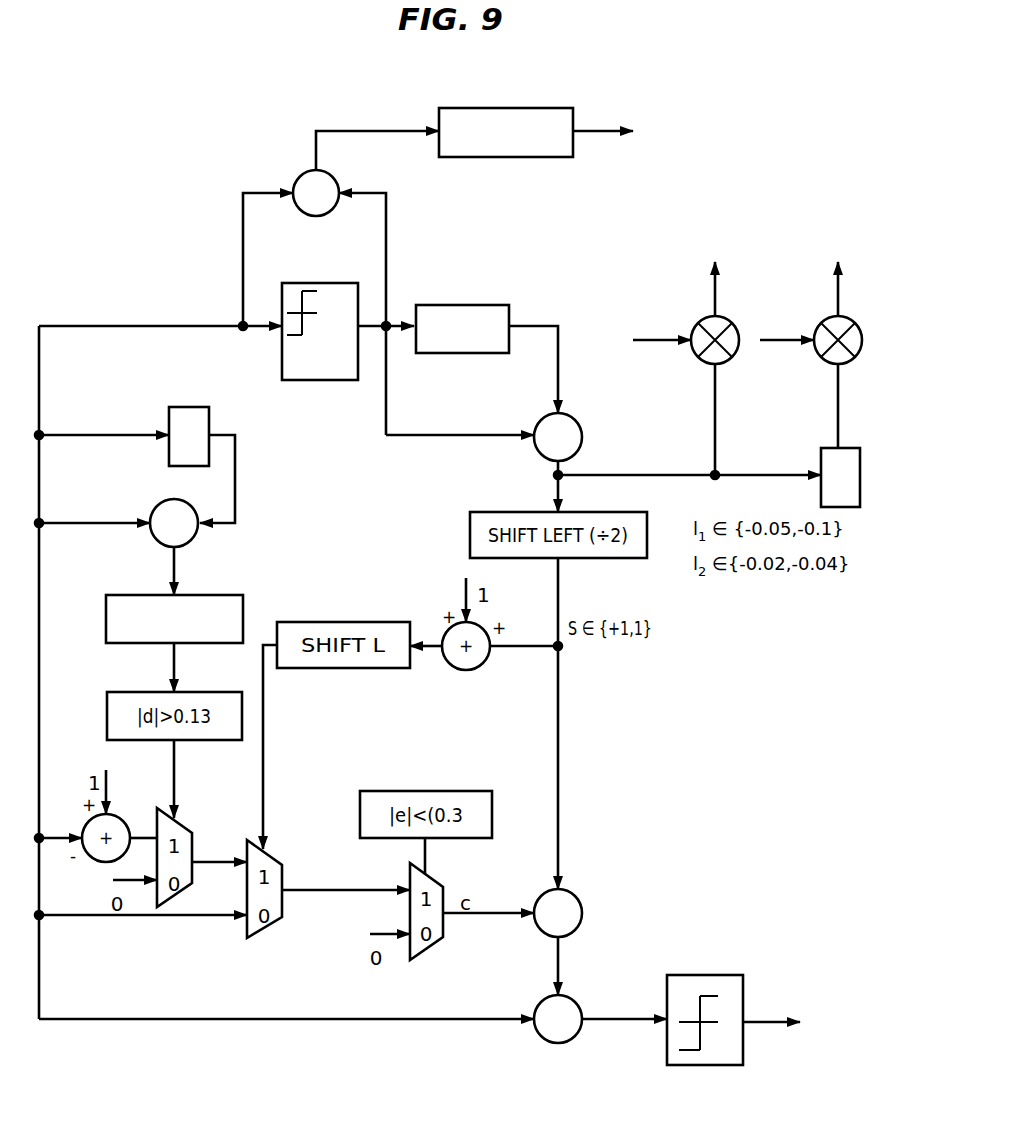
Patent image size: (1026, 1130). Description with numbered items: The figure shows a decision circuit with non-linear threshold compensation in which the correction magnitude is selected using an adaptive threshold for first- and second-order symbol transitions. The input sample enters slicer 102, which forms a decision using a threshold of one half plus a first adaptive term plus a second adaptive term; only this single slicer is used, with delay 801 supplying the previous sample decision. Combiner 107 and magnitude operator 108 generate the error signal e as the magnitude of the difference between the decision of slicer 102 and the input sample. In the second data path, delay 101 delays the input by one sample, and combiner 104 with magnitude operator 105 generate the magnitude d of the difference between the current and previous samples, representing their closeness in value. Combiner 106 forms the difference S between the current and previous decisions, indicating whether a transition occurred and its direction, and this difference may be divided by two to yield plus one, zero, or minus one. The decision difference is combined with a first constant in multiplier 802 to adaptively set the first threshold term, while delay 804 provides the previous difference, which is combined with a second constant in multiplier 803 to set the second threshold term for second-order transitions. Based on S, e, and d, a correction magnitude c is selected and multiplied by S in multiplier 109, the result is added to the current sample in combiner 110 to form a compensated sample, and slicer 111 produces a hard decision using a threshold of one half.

The delay 101 is at (186, 407).
The slicer 102 is at (314, 283).
The combiner 104 is at (194, 544).
The magnitude operator 105 is at (245, 613).
The combiner 106 is at (577, 420).
The combiner 107 is at (330, 174).
The magnitude operator 108 is at (509, 108).
The multiplier 109 is at (580, 898).
The combiner 110 is at (581, 1003).
The slicer 111 is at (700, 975).
The delay 801 is at (463, 305).
The multiplier 802 is at (692, 358).
The multiplier 803 is at (815, 358).
The delay 804 is at (821, 462).